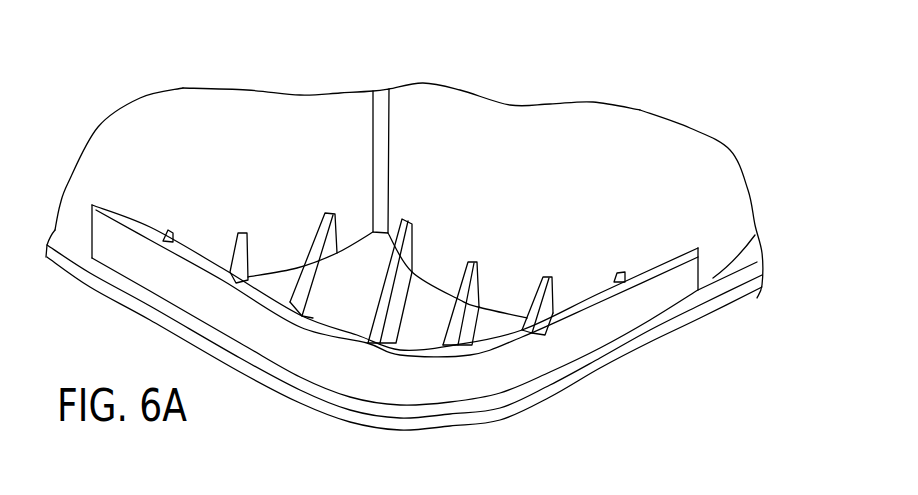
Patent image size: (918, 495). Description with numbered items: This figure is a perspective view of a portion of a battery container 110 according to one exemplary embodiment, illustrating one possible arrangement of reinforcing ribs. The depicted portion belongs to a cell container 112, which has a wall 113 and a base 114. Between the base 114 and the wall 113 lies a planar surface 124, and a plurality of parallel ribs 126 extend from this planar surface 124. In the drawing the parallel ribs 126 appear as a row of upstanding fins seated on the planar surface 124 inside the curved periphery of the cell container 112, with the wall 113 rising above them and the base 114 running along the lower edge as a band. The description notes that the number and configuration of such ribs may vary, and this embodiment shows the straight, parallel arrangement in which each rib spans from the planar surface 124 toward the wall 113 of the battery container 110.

The battery container 110 is at (686, 104).
The cell container 112 is at (270, 103).
The wall 113 is at (207, 125).
The base 114 is at (633, 312).
The planar surface 124 is at (413, 325).
The parallel ribs 126 is at (465, 318).